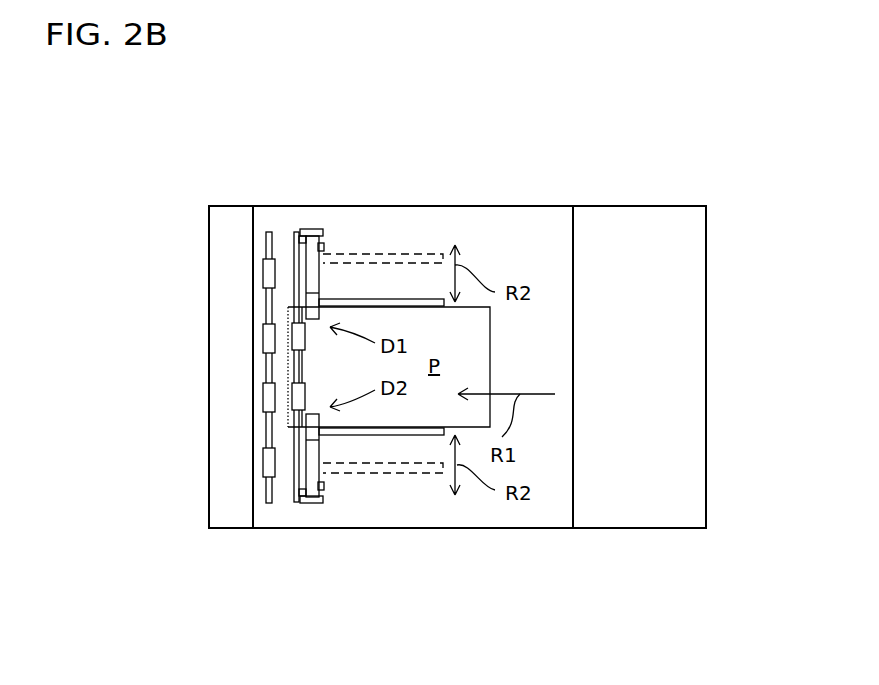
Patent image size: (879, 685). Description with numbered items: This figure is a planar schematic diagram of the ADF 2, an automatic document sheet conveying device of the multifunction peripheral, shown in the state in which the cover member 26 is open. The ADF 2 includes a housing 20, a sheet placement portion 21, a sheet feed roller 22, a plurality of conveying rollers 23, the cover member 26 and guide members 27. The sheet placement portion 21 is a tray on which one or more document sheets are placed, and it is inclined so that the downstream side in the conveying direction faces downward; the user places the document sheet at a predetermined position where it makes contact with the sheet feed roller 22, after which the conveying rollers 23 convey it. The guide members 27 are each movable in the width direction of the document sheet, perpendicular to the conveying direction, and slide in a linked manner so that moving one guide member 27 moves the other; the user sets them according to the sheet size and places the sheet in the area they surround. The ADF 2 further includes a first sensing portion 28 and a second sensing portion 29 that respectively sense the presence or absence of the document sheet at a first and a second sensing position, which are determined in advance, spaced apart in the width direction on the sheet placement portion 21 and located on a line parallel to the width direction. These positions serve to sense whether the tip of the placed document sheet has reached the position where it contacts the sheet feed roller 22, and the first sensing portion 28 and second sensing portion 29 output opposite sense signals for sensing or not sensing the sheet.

The ADF 2 is at (692, 167).
The housing 20 is at (707, 295).
The sheet placement portion 21 is at (537, 204).
The sheet feed roller 22 is at (305, 348).
The conveying rollers 23 is at (262, 332).
The cover member 26 is at (233, 205).
The guide members 27 is at (435, 252).
The first sensing portion 28 is at (335, 245).
The second sensing portion 29 is at (334, 494).